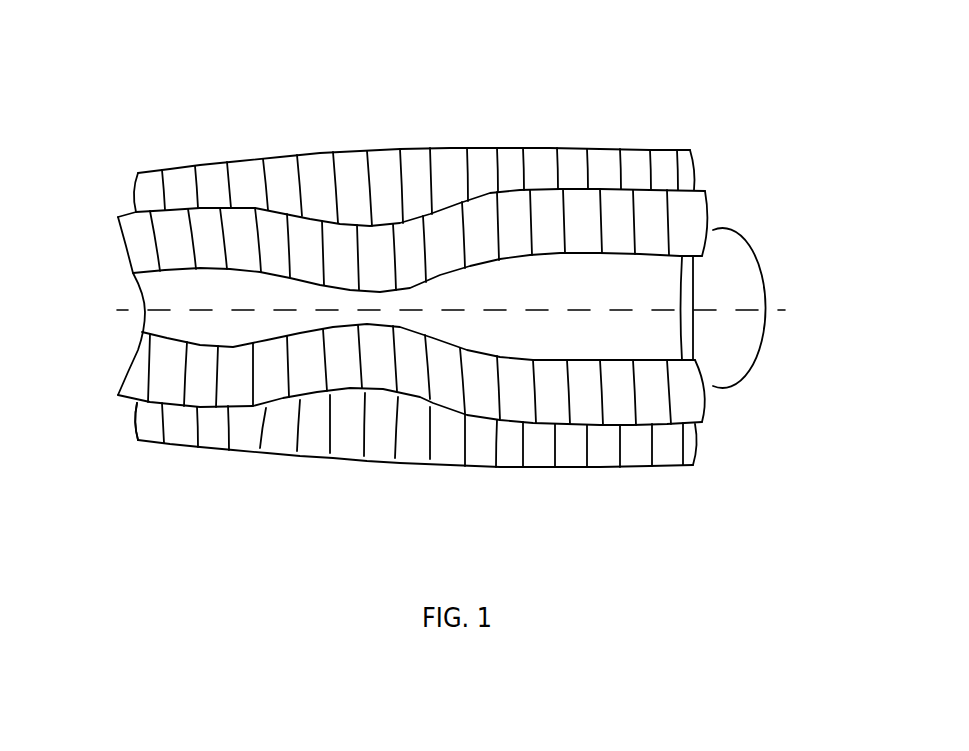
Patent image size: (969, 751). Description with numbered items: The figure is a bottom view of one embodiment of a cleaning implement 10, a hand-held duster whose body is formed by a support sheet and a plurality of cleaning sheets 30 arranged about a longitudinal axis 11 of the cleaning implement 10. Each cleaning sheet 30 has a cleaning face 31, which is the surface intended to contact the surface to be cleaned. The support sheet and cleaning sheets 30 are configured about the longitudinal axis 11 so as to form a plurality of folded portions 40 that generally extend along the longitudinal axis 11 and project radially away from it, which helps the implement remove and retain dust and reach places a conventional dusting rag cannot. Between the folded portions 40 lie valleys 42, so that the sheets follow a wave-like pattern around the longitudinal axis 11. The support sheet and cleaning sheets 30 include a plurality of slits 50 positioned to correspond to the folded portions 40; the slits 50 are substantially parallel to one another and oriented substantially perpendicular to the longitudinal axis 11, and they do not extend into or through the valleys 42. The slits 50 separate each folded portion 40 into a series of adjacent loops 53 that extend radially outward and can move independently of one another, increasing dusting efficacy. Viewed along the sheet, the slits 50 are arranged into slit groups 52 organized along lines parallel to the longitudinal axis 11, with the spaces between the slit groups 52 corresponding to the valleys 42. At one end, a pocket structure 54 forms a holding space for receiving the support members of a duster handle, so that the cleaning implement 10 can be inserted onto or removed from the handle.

The cleaning implement 10 is at (110, 132).
The longitudinal axis 11 is at (739, 313).
The cleaning sheets 30 is at (118, 217).
The cleaning face 31 is at (148, 343).
The folded portions 40 is at (376, 225).
The valleys 42 is at (168, 296).
The slits 50 is at (194, 432).
The slit groups 52 is at (702, 172).
The loops 53 is at (340, 452).
The pocket structure 54 is at (748, 258).